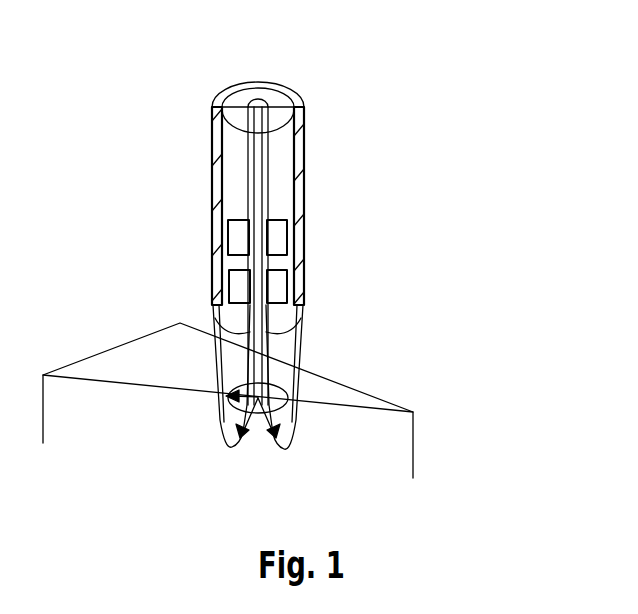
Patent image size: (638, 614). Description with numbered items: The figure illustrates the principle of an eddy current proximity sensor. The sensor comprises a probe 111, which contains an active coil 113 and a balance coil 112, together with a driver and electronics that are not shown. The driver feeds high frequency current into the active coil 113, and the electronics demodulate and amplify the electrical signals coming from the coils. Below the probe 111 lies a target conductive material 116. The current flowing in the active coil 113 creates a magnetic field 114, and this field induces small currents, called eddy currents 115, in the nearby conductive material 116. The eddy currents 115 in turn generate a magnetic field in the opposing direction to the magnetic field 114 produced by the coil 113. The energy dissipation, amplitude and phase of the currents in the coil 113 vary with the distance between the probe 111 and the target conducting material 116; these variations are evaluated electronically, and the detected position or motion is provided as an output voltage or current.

The probe 111 is at (223, 86).
The balance coil 112 is at (275, 240).
The active coil 113 is at (277, 297).
The magnetic field 114 is at (302, 353).
The eddy currents 115 is at (229, 386).
The target conductive material 116 is at (413, 438).